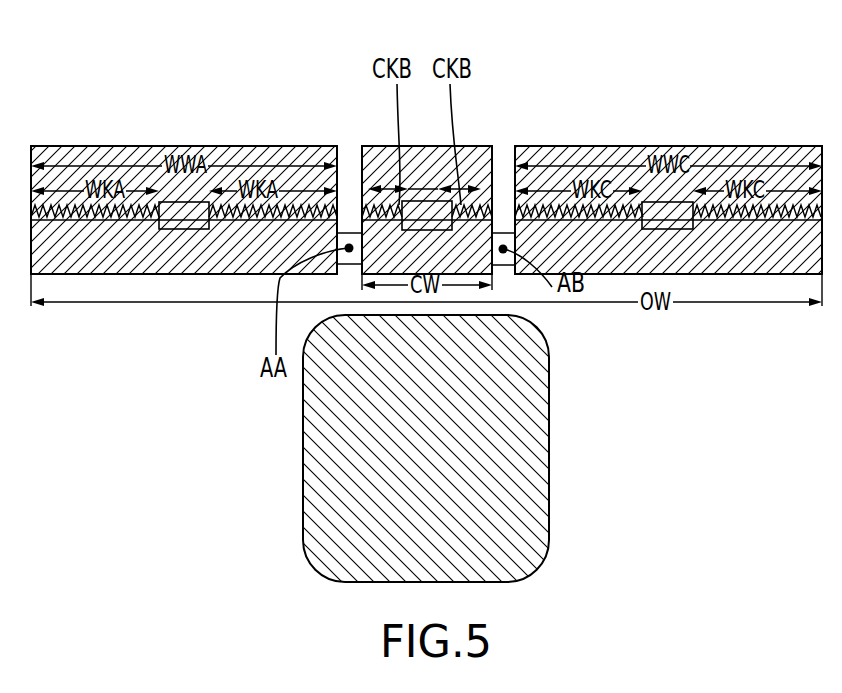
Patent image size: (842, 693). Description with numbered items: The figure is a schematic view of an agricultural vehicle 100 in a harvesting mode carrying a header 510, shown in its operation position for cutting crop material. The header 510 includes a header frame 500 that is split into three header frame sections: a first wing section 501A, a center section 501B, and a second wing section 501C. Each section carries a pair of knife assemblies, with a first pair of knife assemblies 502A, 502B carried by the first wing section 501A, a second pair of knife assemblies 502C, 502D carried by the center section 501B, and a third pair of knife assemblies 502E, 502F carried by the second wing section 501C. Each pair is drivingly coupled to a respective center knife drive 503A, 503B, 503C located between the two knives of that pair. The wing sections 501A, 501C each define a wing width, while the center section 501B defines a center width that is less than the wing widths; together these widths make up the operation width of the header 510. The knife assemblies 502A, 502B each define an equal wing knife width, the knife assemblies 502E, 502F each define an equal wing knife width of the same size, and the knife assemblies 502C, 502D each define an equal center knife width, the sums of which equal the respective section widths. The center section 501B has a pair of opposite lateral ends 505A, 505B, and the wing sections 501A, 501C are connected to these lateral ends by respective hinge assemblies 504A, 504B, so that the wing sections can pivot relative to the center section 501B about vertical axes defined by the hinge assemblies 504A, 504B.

The vehicle 100 is at (572, 471).
The header frame 500 is at (461, 312).
The first wing section 501A is at (185, 146).
The center section 501B is at (428, 146).
The second wing section 501C is at (707, 146).
The knife assembly 502A is at (93, 220).
The knife assembly 502B is at (281, 220).
The knife assembly 502C is at (394, 206).
The knife assembly 502D is at (487, 206).
The knife assembly 502E is at (578, 220).
The knife assembly 502F is at (758, 220).
The center knife drive 503A is at (192, 229).
The center knife drive 503B is at (417, 230).
The center knife drive 503C is at (675, 229).
The hinge assembly 504A is at (350, 264).
The hinge assembly 504B is at (503, 265).
The lateral end 505A is at (360, 207).
The lateral end 505B is at (501, 177).
The header 510 is at (552, 321).